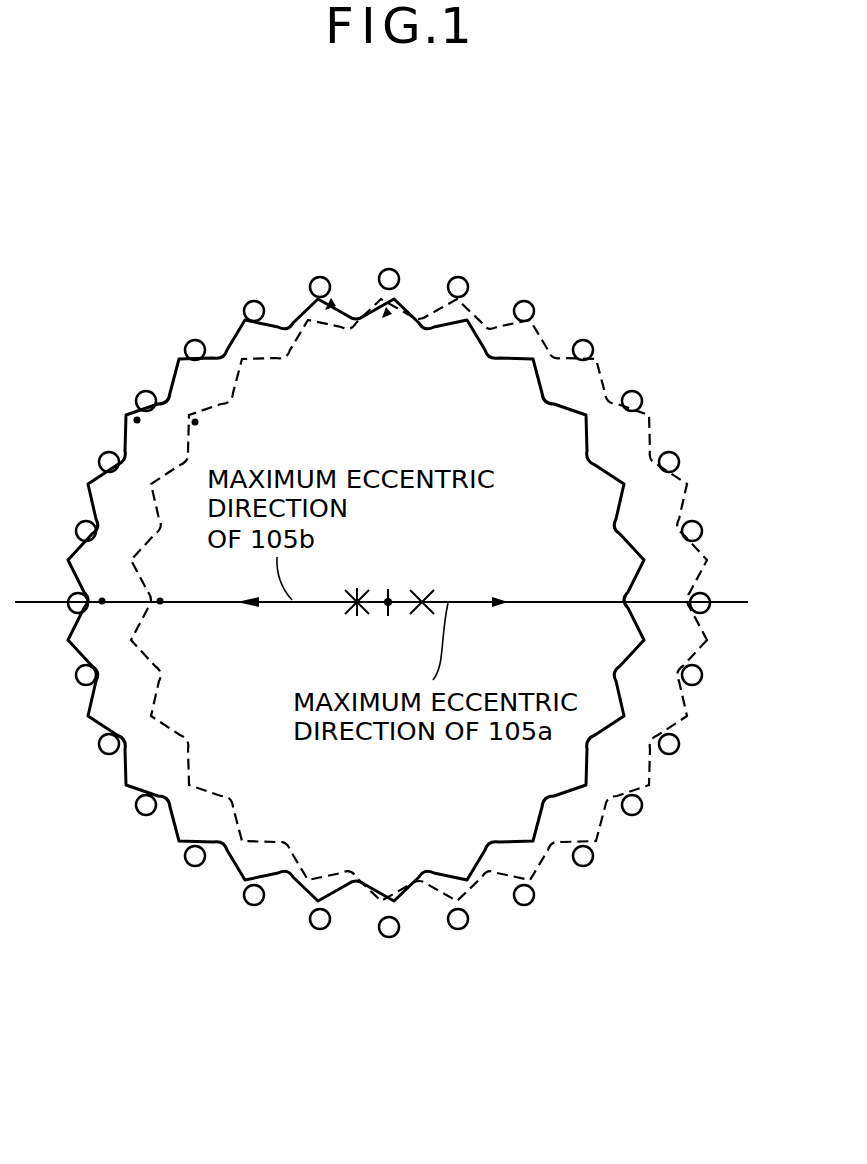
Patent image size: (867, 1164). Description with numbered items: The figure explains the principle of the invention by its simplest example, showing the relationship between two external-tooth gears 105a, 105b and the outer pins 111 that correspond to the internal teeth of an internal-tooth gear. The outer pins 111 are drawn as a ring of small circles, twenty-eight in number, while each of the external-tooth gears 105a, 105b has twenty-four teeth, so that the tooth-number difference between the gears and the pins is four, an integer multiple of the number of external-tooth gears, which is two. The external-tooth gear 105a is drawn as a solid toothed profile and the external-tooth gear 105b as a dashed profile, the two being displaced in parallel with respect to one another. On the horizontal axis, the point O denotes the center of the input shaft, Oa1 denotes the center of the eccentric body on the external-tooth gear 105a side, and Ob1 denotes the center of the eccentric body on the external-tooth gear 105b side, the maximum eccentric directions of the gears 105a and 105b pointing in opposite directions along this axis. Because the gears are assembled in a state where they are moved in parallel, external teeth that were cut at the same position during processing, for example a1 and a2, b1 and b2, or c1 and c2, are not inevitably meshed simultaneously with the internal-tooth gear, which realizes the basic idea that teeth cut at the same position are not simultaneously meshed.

The outer pin 111 is at (583, 340).
The external-tooth gear 105a is at (590, 525).
The external-tooth gear 105b is at (672, 713).
The external tooth a1 is at (102, 598).
The external tooth a2 is at (160, 598).
The external tooth b1 is at (137, 420).
The external tooth b2 is at (195, 422).
The external tooth c1 is at (327, 306).
The external tooth c2 is at (385, 313).
The center of input shaft O is at (390, 598).
The center of eccentric body Oa1 is at (430, 598).
The center of eccentric body Ob1 is at (357, 618).